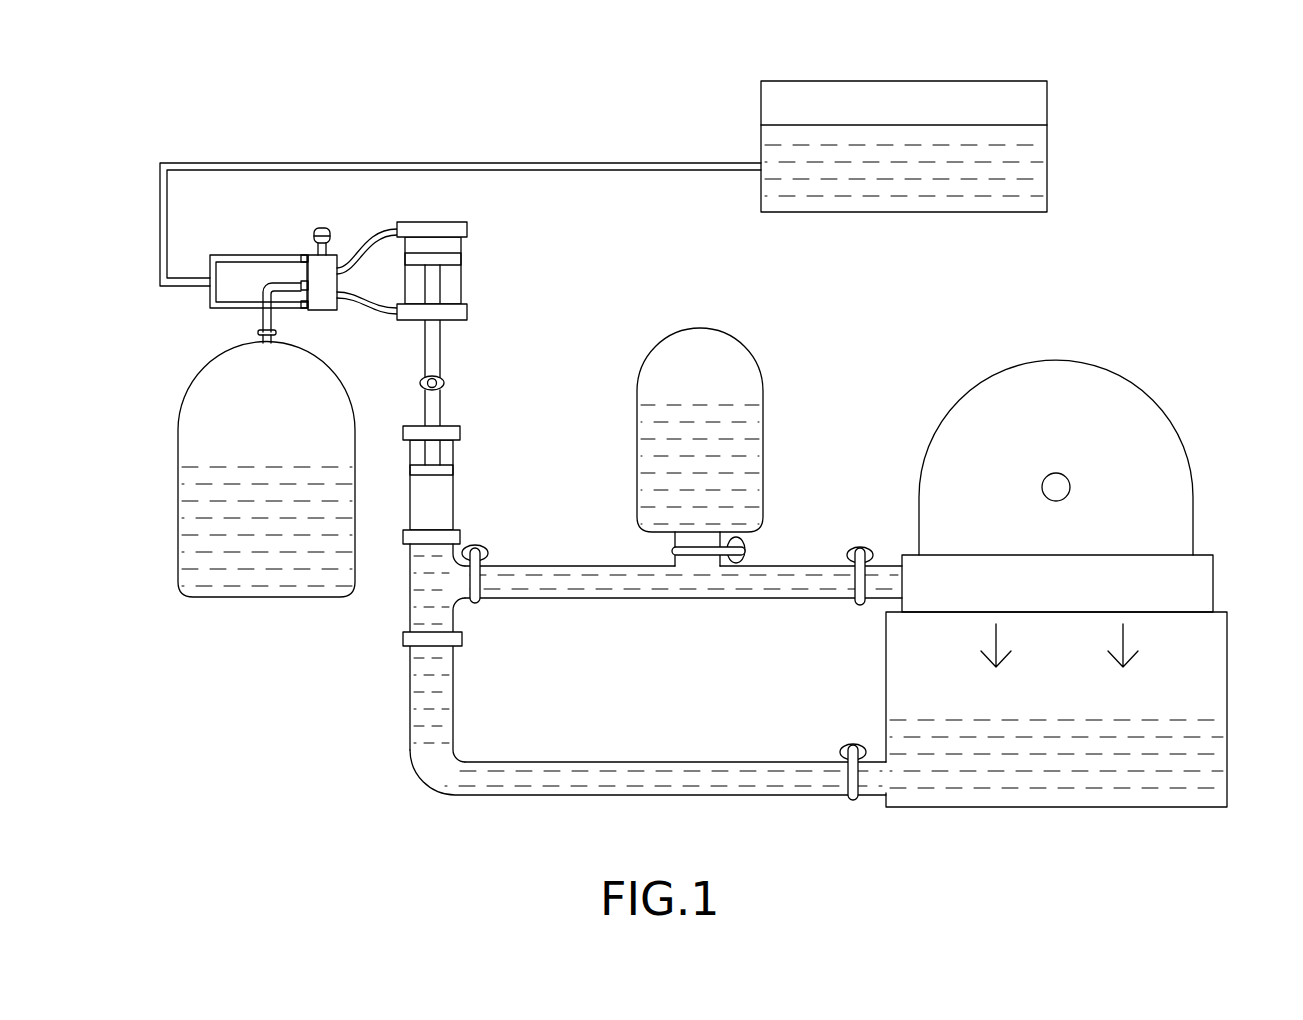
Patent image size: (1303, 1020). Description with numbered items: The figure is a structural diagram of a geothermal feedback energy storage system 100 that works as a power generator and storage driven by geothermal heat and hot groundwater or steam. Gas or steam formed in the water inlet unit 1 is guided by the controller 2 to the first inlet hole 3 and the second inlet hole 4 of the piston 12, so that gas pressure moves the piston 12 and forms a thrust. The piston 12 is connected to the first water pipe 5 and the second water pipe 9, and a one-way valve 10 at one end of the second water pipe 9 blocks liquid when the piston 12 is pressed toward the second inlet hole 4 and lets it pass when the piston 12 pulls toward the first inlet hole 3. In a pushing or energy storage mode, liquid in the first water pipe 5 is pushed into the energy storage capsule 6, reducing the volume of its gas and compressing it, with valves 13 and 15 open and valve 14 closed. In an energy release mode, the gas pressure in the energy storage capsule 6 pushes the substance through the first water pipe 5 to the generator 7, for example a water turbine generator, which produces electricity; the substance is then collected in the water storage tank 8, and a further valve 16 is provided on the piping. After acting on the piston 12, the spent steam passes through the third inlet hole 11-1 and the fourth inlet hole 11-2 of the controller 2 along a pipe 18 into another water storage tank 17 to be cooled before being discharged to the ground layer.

The liquid supply system 100 is at (1246, 59).
The water inlet unit 1 is at (178, 528).
The controller 2 is at (322, 228).
The first inlet hole 3 is at (467, 230).
The second inlet hole 4 is at (467, 312).
The first water pipe 5 is at (585, 600).
The energy storage capsule 6 is at (760, 355).
The generator 7 is at (1155, 400).
The water storage tank 8 is at (1228, 660).
The second water pipe 9 is at (590, 796).
The valve 10 is at (403, 640).
The third inlet hole 11-1 is at (240, 255).
The fourth inlet hole 11-2 is at (240, 308).
The piston 12 is at (461, 257).
The valve 13 is at (478, 548).
The valve 14 is at (860, 548).
The valve 15 is at (745, 548).
The valve 16 is at (853, 745).
The another water storage tank 17 is at (1047, 168).
The gas pipe 18 is at (432, 162).